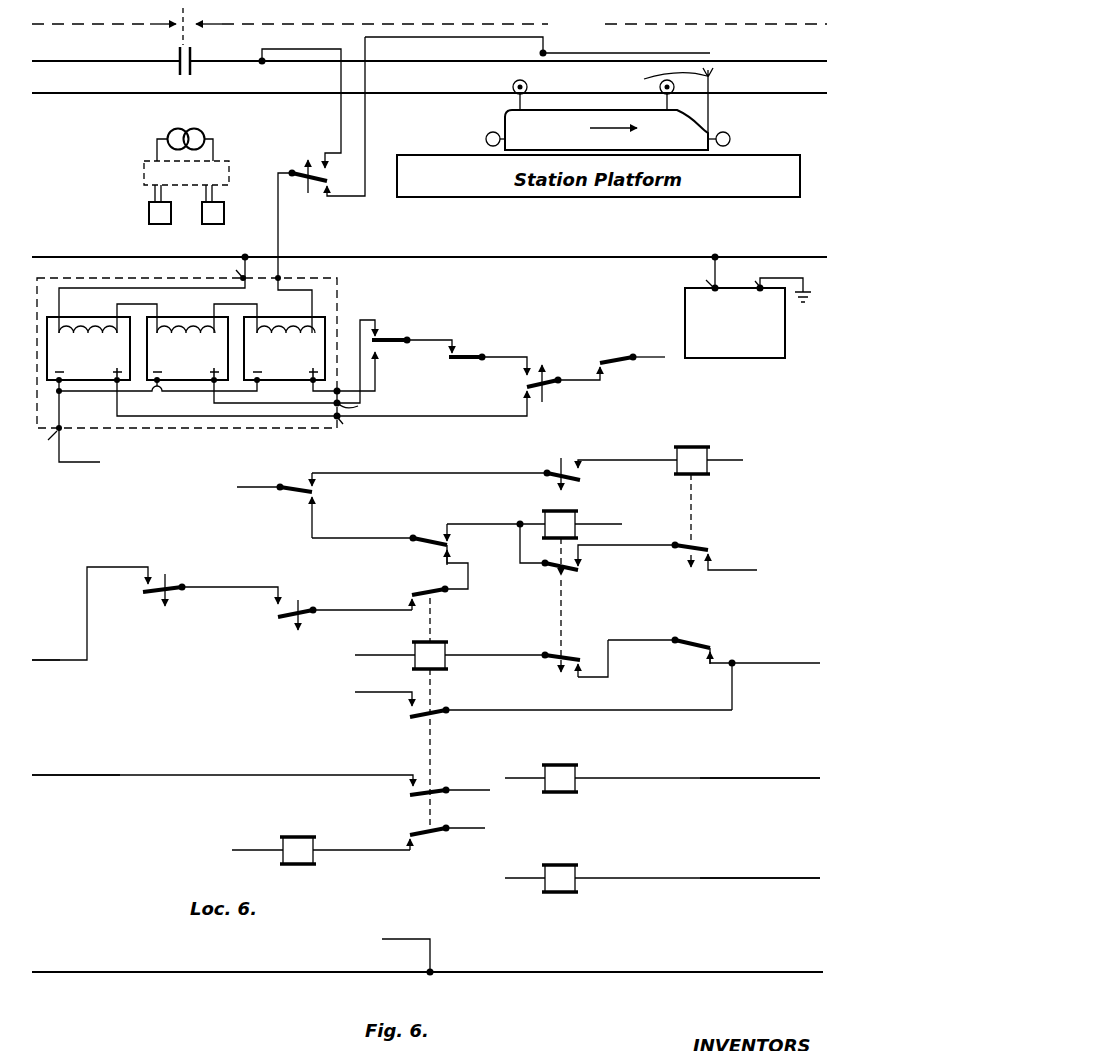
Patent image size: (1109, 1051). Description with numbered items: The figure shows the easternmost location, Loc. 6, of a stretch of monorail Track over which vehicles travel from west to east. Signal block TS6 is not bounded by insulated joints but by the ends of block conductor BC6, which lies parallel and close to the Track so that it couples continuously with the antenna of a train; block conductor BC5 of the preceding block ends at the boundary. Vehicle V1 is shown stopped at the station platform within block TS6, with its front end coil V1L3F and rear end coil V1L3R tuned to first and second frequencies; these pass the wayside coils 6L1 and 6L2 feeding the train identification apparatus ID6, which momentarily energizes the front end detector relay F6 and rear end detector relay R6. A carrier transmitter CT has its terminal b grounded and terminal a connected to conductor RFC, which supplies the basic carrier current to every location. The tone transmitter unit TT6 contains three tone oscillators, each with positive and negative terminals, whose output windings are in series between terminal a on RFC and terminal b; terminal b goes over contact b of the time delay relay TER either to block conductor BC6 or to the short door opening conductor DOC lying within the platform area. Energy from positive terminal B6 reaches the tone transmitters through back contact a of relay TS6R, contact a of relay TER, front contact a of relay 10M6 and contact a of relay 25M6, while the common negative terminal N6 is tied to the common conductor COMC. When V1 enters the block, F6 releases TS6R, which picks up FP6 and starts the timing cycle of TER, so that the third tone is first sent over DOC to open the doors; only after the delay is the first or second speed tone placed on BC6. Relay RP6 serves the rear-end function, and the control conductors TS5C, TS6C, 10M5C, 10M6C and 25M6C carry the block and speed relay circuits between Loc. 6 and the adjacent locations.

The location 6 is at (186, 39).
The signal block TS6 is at (429, 24).
The block conductor BC5 is at (112, 57).
The block conductor BC6 is at (470, 57).
The monorail railway track Track is at (126, 89).
The door opening conductor DOC is at (676, 50).
The wayside coil 6L1 is at (168, 132).
The wayside coil 6L2 is at (202, 131).
The train identification apparatus ID6 is at (186, 181).
The front end train detector relay F6 is at (149, 215).
The rear end train detector relay R6 is at (224, 213).
The time delay relay TER is at (338, 170).
The carrier frequency conductor RFC is at (110, 252).
The first vehicle V1 is at (549, 144).
The rear end coil V1L3R is at (487, 134).
The front end coil V1L3F is at (740, 128).
The tone transmitter unit TT6 is at (125, 428).
The negative battery terminal N6 is at (406, 705).
The relay 25M6 is at (411, 328).
The relay 10M6 is at (476, 348).
The track relay TS6R is at (395, 598).
The carrier transmitter CT is at (768, 359).
The positive battery terminal B6 is at (446, 705).
The relay FP6 is at (135, 606).
The relay RP6 is at (275, 634).
The control conductor TS5C is at (34, 662).
The control conductor TS6C is at (808, 662).
The control conductor 10M5C is at (126, 771).
The control conductor 10M6C is at (818, 773).
The control conductor 25M6C is at (816, 873).
The common conductor COMC is at (276, 968).